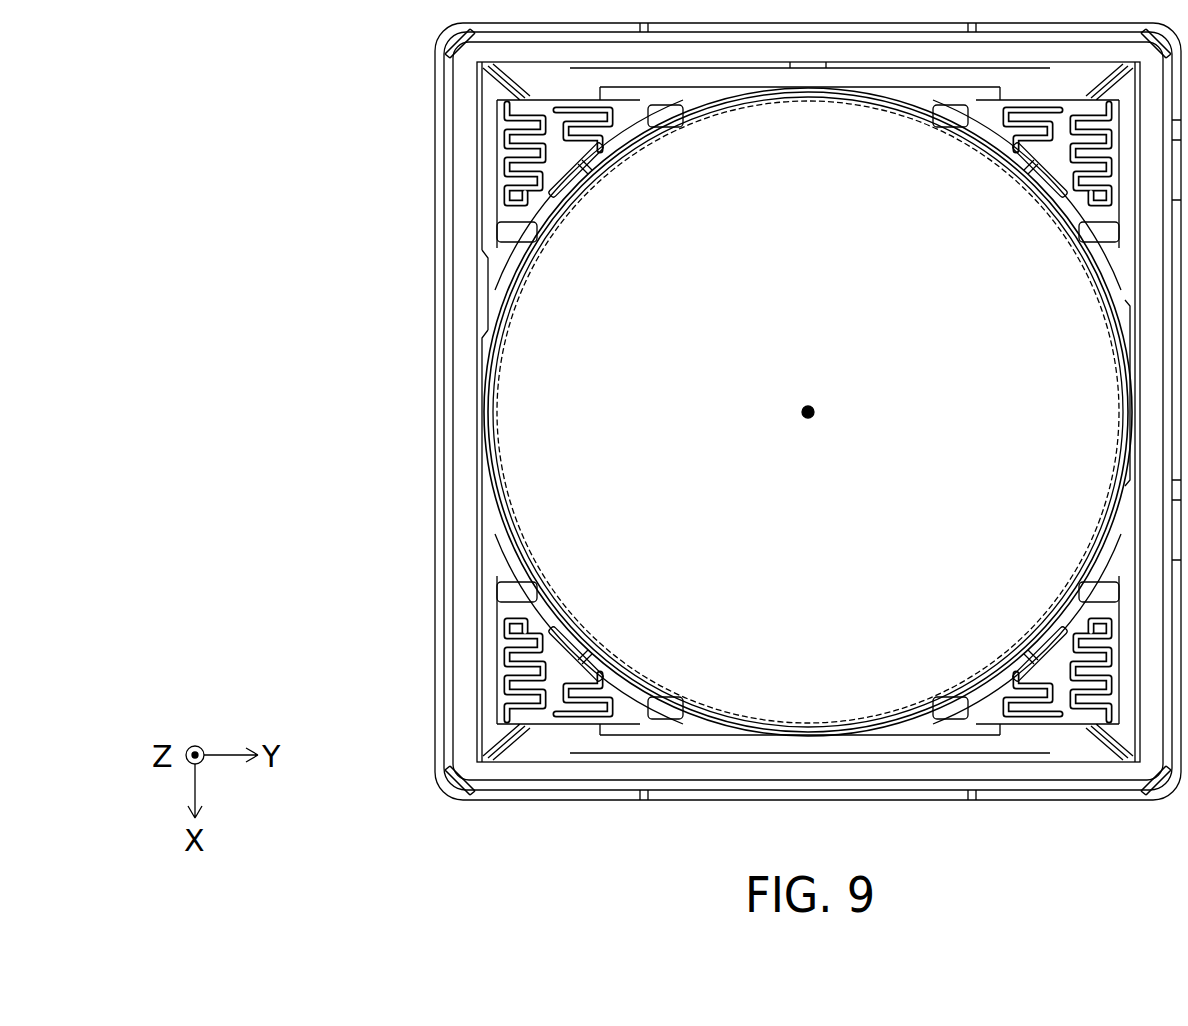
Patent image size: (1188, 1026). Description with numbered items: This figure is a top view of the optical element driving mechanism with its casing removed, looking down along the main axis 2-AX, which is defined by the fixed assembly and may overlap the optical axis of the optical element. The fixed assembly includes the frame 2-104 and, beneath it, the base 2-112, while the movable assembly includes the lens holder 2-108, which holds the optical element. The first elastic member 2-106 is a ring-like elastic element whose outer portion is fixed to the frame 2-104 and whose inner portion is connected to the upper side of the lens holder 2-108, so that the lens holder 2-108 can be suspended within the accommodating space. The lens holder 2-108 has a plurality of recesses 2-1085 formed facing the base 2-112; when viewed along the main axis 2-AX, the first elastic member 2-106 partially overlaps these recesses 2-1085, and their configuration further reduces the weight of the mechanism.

The frame 2-104 is at (462, 543).
The first elastic member 2-106 is at (530, 611).
The lens holder 2-108 is at (818, 705).
The recesses 2-1085 is at (588, 176).
The base 2-112 is at (446, 796).
The main axis 2-AX is at (853, 411).